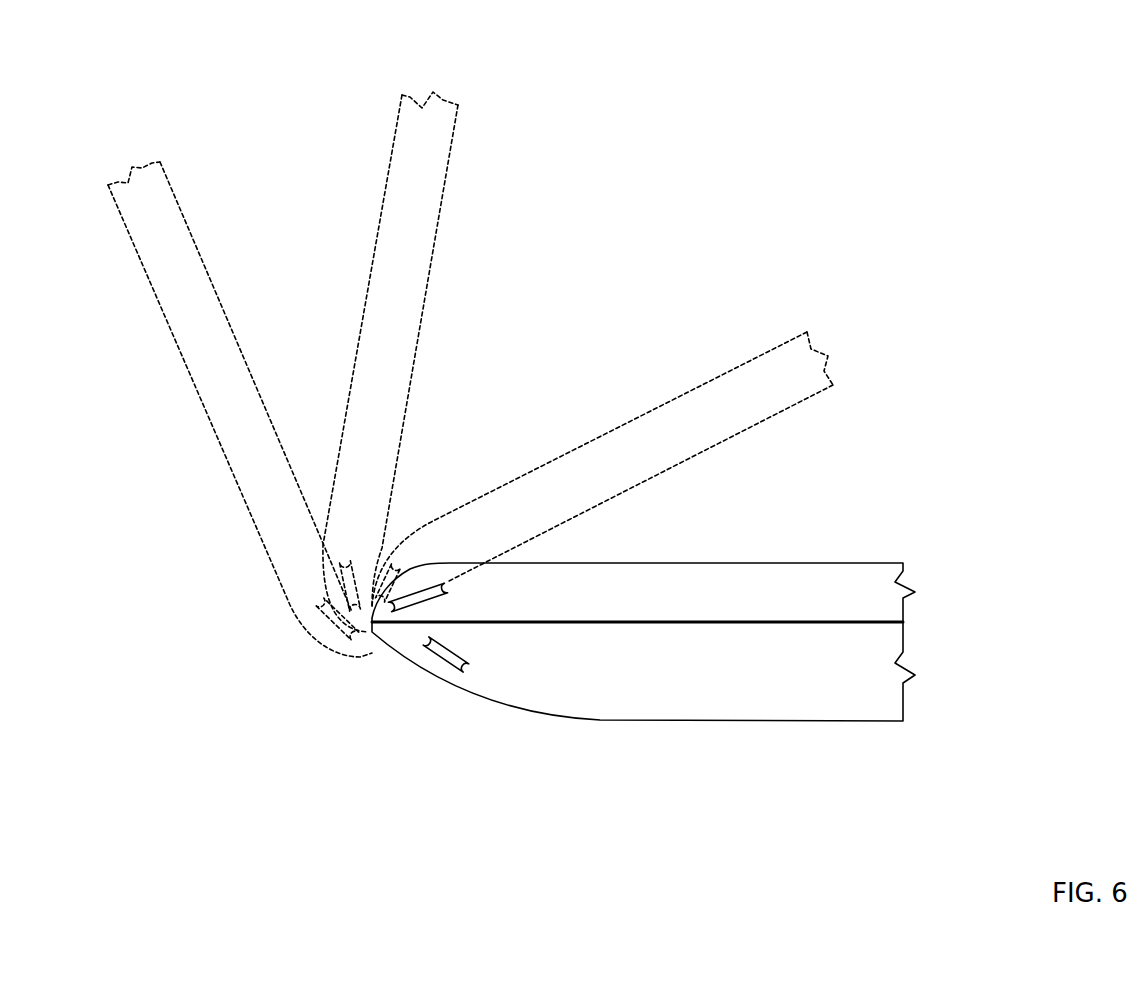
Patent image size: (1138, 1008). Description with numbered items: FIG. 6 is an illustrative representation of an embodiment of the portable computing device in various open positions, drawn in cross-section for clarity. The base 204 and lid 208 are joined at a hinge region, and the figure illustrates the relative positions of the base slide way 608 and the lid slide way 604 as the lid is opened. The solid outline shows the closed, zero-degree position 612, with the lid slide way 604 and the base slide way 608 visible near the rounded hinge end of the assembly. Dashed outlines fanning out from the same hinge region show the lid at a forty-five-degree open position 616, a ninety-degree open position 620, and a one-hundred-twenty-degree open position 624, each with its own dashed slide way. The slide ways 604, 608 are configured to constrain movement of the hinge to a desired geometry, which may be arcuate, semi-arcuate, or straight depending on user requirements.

The closed (0°) position 612 is at (671, 656).
The lid 208 is at (812, 563).
The base 204 is at (803, 722).
The lid slide way 604 is at (443, 597).
The base slide way 608 is at (442, 662).
The 45° open position 616 is at (867, 350).
The 90° open position 620 is at (480, 78).
The 120° open position 624 is at (170, 138).